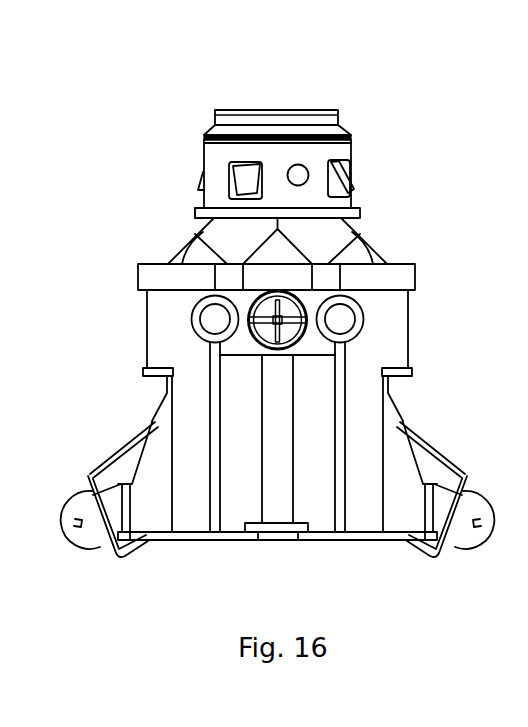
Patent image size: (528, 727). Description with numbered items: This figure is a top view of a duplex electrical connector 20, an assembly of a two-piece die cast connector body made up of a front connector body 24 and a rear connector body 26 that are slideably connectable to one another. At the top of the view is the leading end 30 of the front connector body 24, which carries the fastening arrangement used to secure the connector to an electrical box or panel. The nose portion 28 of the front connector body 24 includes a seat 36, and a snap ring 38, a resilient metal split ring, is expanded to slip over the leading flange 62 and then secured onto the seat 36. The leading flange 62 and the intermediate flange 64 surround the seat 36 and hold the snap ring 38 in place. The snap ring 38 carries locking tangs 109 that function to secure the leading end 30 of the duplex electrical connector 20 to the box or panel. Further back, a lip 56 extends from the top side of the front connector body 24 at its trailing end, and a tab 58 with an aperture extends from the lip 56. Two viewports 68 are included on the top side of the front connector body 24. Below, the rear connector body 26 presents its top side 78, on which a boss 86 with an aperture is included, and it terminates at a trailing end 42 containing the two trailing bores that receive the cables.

The duplex electrical connector 20 is at (108, 138).
The leading end 30 is at (278, 125).
The leading flange 62 is at (210, 134).
The nose portion 28 is at (353, 142).
The locking tangs 109 is at (243, 184).
The snap ring 38 is at (352, 152).
The seat 36 is at (352, 205).
The intermediate flange 64 is at (195, 214).
The front connector body 24 is at (373, 247).
The lip 56 is at (415, 277).
The tab 58 is at (267, 285).
The rear connector body 26 is at (406, 350).
The viewports 68 is at (343, 316).
The top side 78 is at (230, 445).
The boss 86 is at (314, 351).
The trailing end 42 is at (320, 541).